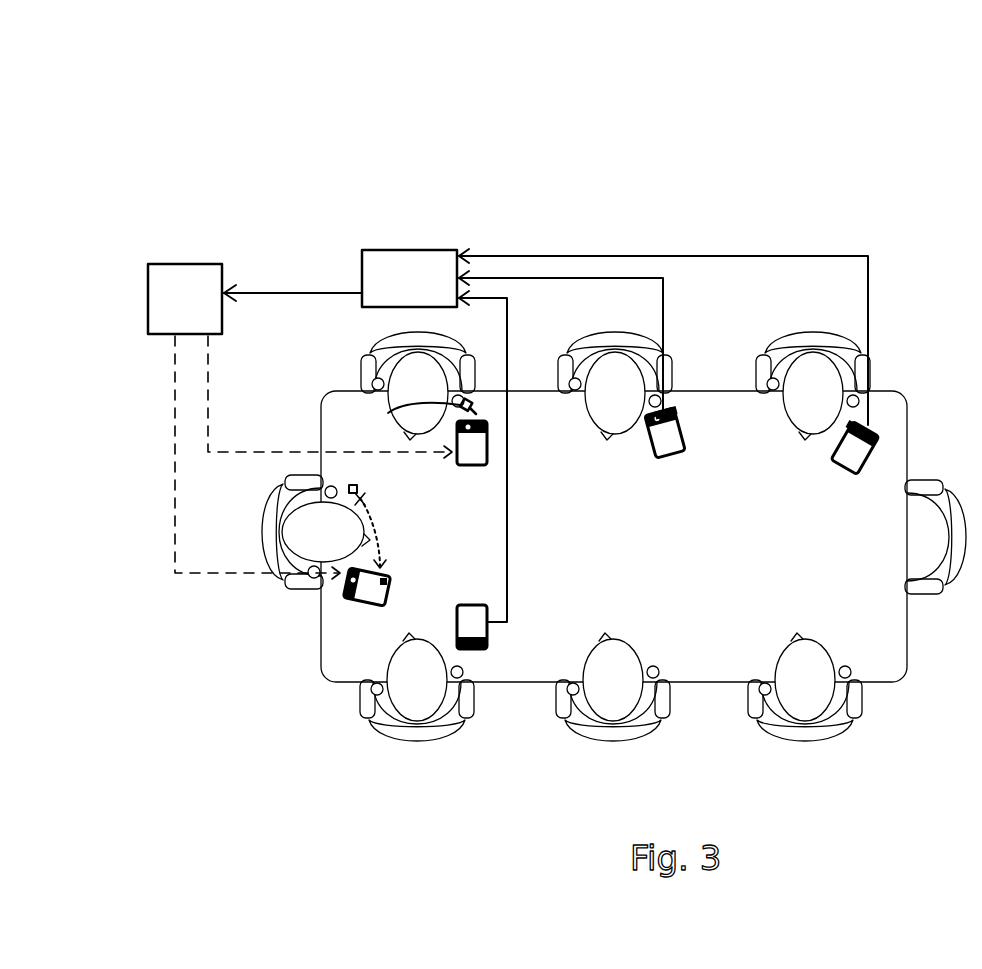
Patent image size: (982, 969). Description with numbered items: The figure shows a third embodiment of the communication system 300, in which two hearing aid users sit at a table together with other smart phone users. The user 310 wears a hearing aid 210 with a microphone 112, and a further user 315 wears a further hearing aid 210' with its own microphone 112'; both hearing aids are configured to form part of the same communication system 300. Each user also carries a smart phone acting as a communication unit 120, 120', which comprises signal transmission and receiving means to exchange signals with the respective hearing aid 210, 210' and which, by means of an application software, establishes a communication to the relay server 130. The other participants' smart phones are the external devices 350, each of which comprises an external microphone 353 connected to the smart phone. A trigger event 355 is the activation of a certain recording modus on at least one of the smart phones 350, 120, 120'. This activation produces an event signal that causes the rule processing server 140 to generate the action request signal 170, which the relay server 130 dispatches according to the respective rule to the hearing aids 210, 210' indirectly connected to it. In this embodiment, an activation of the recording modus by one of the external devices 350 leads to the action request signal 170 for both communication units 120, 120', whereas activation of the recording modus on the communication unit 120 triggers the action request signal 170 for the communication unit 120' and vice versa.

The communication system 300 is at (338, 116).
The relay server 130 is at (176, 272).
The rule processing server 140 is at (400, 268).
The action request signal 170 is at (262, 292).
The further user 315 is at (398, 383).
The user 310 is at (313, 535).
The communication unit 120 is at (318, 607).
The communication unit 120' is at (530, 468).
The microphone 112 is at (409, 585).
The microphone 112' is at (513, 421).
The hearing aid 210 is at (399, 525).
The further hearing aid 210' is at (401, 412).
The external devices 350 is at (672, 448).
The external microphones 353 is at (675, 412).
The trigger event 355 is at (866, 452).